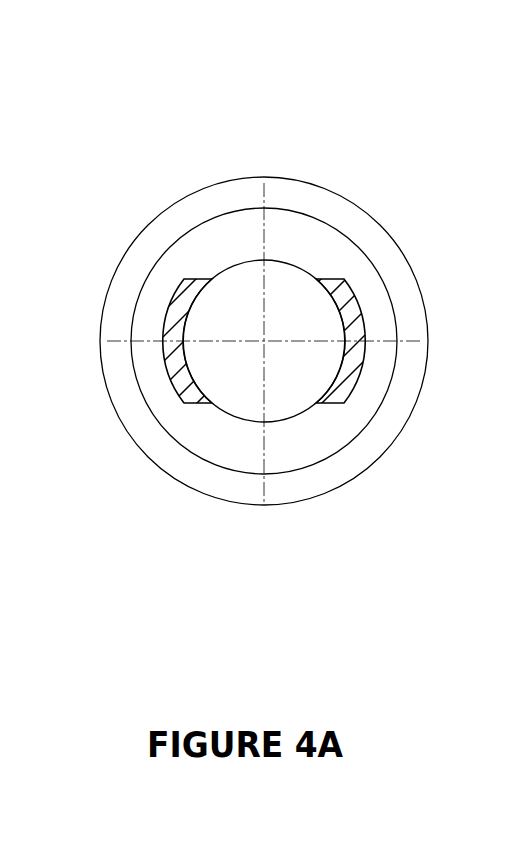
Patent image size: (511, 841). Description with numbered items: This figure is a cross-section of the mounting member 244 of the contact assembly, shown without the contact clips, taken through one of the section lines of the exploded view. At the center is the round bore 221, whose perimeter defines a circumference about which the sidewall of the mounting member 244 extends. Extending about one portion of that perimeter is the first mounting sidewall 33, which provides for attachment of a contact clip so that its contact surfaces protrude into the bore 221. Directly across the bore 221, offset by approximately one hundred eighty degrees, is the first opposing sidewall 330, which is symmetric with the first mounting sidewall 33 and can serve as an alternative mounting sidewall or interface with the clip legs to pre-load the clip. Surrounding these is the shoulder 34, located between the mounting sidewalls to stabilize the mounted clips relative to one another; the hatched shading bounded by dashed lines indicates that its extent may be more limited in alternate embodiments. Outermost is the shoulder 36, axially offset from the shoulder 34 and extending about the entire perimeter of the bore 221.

The mounting member 244 is at (344, 85).
The bore 221 is at (245, 303).
The first mounting sidewall 33 is at (170, 330).
The first opposing sidewall 330 is at (355, 312).
The shoulder 34 is at (140, 368).
The shoulder 36 is at (143, 433).